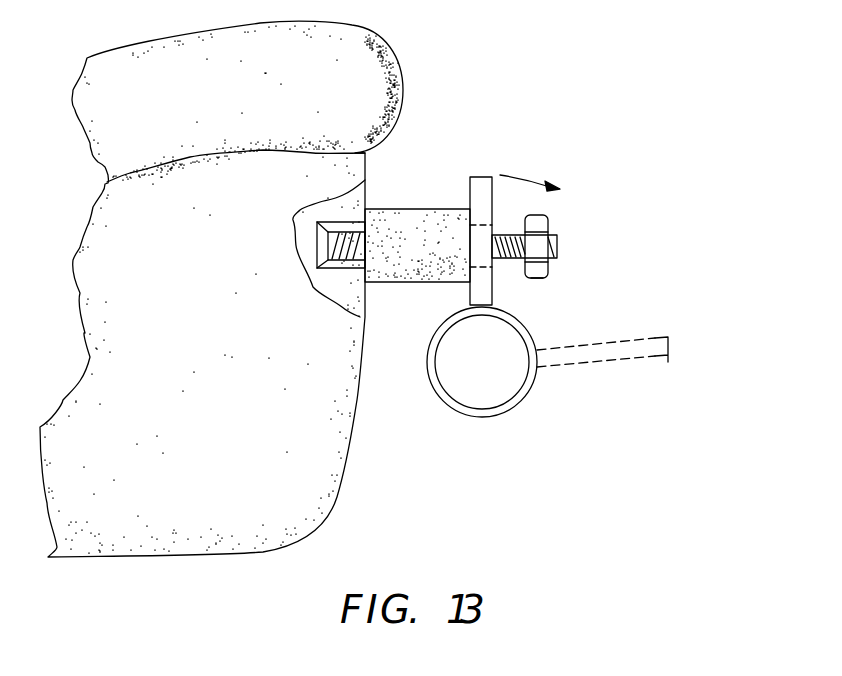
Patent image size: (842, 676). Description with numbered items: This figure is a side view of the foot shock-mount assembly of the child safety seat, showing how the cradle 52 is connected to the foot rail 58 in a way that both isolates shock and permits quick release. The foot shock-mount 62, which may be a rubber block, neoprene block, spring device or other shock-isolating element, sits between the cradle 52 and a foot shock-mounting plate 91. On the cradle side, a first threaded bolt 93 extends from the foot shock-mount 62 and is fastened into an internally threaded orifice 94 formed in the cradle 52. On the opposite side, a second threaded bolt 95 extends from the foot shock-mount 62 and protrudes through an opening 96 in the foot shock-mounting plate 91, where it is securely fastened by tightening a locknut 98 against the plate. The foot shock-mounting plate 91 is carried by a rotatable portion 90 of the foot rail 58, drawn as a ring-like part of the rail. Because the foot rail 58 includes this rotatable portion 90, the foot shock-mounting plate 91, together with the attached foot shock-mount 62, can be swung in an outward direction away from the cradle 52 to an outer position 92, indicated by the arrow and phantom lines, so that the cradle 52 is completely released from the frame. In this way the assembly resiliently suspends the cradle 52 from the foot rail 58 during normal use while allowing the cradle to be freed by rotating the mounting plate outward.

The cradle 52 is at (290, 487).
The foot shock-mount 62 is at (418, 210).
The foot shock-mounting plate 91 is at (470, 187).
The opening 96 is at (479, 225).
The internally threaded orifice 94 is at (307, 232).
The first threaded bolt 93 is at (348, 258).
The second threaded bolt 95 is at (557, 243).
The locknut 98 is at (540, 277).
The rotatable portion 90 is at (483, 417).
The foot rail 58 is at (505, 375).
The outer position 92 is at (671, 359).